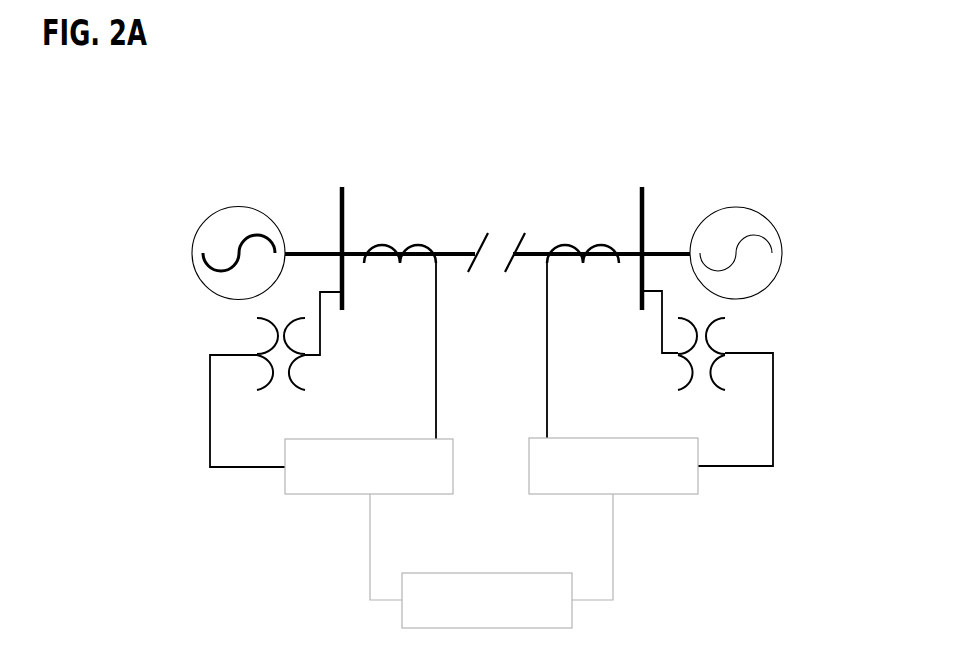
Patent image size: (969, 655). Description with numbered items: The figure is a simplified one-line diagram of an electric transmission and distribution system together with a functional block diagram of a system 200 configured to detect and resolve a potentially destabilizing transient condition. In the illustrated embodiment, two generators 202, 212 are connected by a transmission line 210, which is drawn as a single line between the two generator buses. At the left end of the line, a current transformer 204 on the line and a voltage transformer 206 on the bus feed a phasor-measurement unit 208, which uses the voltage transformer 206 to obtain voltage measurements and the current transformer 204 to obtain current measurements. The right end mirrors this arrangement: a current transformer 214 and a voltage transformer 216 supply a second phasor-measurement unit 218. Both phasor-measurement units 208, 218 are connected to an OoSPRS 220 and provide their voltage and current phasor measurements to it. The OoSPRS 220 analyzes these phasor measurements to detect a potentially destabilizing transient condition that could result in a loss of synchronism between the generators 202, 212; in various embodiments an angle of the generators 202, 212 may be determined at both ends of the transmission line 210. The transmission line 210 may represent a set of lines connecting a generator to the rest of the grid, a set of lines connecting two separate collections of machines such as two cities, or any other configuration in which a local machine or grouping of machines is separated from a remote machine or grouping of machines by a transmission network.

The system 200 is at (781, 123).
The generator 202 is at (192, 233).
The current transformer 204 is at (420, 244).
The voltage transformer 206 is at (287, 372).
The phasor-measurement unit 208 is at (310, 498).
The transmission line 210 is at (527, 256).
The generator 212 is at (783, 240).
The current transformer 214 is at (569, 244).
The voltage transformer 216 is at (697, 375).
The phasor-measurement unit 218 is at (682, 498).
The OoSPRS 220 is at (477, 572).